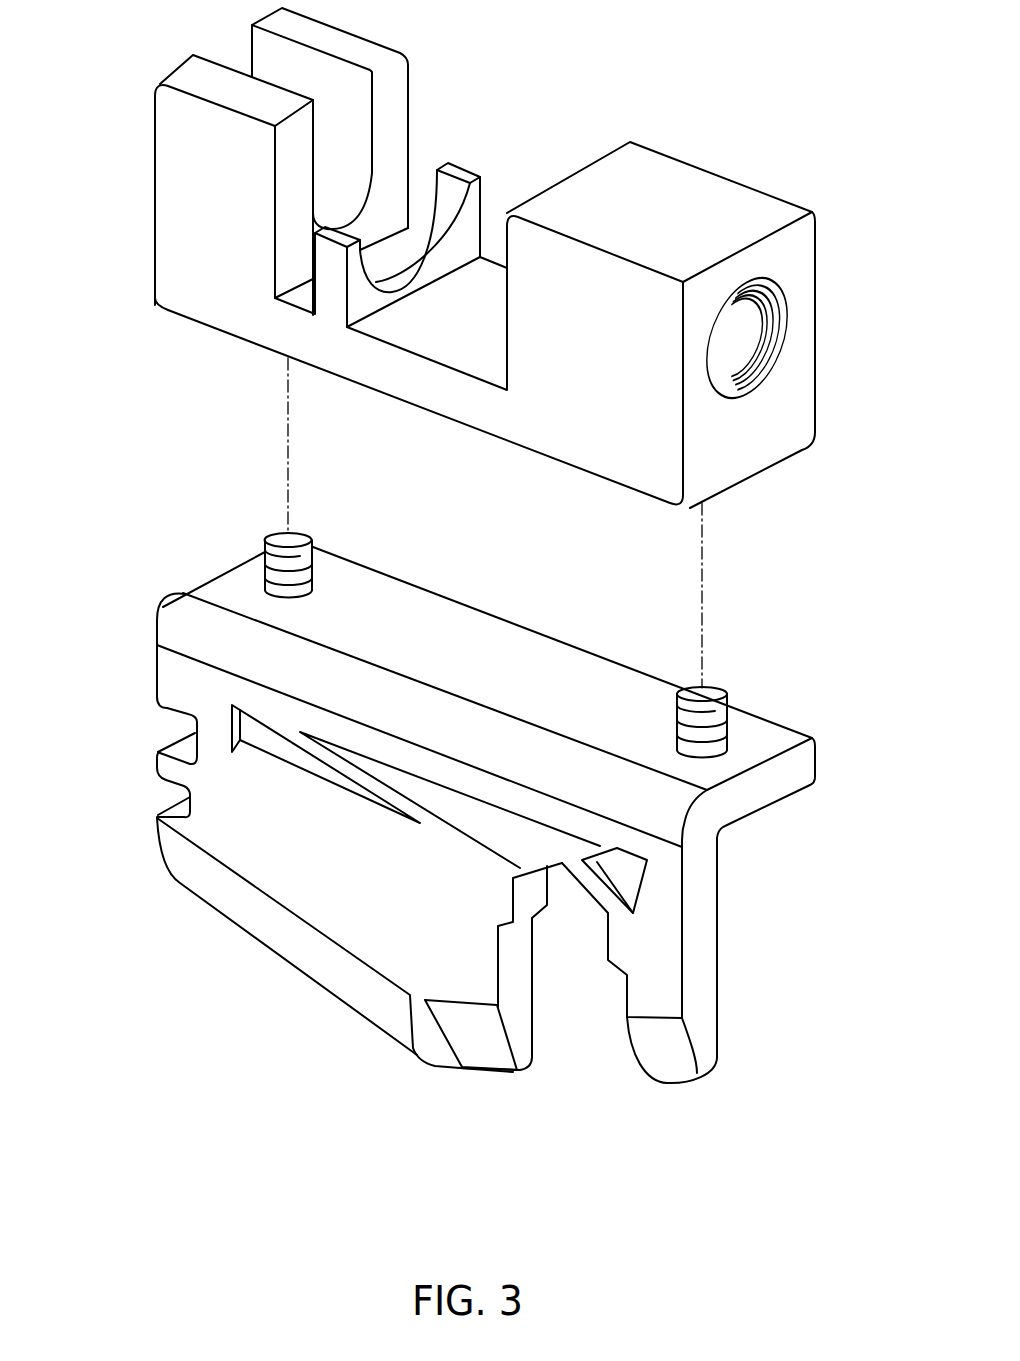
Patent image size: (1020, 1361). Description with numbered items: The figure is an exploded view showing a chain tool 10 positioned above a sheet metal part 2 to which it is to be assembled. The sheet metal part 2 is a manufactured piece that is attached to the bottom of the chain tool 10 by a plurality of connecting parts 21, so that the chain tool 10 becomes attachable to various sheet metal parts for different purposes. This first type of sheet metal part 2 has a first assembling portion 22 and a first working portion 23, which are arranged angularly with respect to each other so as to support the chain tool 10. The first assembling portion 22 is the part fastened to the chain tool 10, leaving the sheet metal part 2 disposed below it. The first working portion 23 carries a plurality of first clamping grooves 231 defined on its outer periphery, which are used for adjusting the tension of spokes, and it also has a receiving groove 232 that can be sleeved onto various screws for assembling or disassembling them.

The chain tool 10 is at (745, 131).
The sheet metal part 2 is at (473, 851).
The connecting parts 21 is at (727, 721).
The first assembling portion 22 is at (765, 798).
The first working portion 23 is at (273, 938).
The first clamping grooves 231 is at (178, 722).
The receiving groove 232 is at (580, 1015).